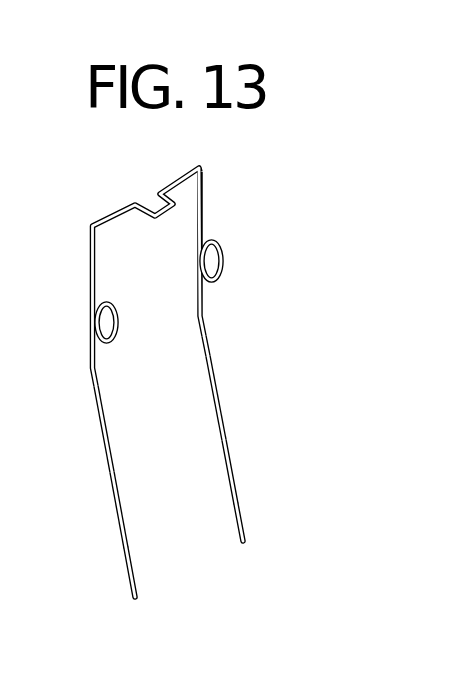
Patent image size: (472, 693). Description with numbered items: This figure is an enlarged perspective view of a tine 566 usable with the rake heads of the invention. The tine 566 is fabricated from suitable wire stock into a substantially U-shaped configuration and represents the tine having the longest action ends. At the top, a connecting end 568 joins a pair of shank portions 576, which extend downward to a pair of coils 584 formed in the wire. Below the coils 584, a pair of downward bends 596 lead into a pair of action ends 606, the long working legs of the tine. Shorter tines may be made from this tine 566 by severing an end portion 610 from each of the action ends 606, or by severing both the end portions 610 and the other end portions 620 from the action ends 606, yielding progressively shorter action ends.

The connecting end 568 is at (158, 193).
The shank portions 576 is at (95, 268).
The coils 584 is at (118, 320).
The downward bends 596 is at (88, 370).
The tine 566 is at (209, 350).
The action ends 606 is at (98, 432).
The other end portions 620 is at (118, 528).
The end portion 610 is at (130, 590).